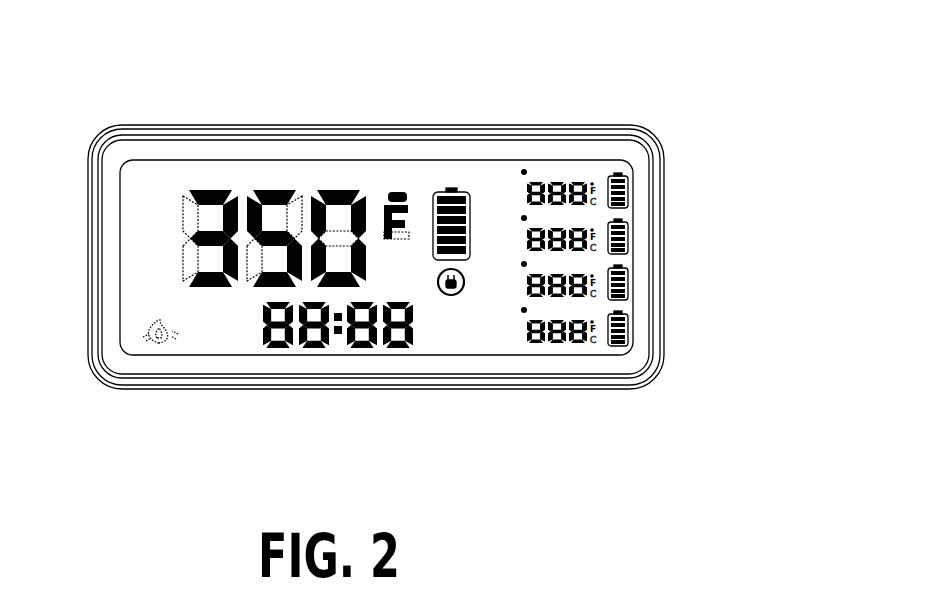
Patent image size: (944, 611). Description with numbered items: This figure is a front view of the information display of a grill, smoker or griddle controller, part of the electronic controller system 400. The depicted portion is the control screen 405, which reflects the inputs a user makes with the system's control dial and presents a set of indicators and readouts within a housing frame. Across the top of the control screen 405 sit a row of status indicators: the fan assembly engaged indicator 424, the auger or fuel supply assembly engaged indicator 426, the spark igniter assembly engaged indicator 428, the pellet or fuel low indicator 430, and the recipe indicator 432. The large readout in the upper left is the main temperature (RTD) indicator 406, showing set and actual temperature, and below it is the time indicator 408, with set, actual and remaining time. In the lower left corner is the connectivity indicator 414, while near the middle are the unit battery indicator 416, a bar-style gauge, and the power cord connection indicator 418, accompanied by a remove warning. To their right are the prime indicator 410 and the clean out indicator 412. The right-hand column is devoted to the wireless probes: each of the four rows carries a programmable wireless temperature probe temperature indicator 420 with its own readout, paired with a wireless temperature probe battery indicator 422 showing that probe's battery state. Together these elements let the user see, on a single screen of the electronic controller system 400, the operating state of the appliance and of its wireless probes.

The electronic controller system 400 is at (629, 76).
The control screen 405 is at (666, 335).
The main temperature (RTD) indicator 406 is at (191, 292).
The time indicator 408 is at (272, 356).
The prime indicator 410 is at (443, 320).
The clean out indicator 412 is at (472, 347).
The connectivity indicator 414 is at (168, 357).
The unit battery indicator 416 is at (458, 181).
The power cord connection indicator 418 is at (457, 273).
The programmable wireless temperature probe temperature indicator 420 is at (598, 181).
The wireless temperature probe battery indicator 422 is at (629, 195).
The fan assembly engaged indicator 424 is at (188, 160).
The auger or fuel supply assembly engaged indicator 426 is at (247, 162).
The spark igniter assembly engaged indicator 428 is at (292, 160).
The pellet or fuel low indicator 430 is at (363, 158).
The recipe indicator 432 is at (437, 164).